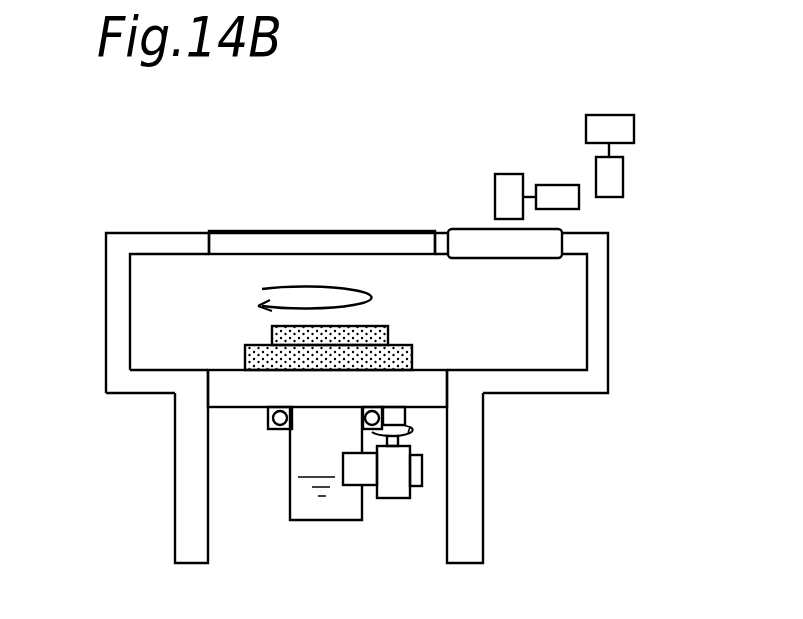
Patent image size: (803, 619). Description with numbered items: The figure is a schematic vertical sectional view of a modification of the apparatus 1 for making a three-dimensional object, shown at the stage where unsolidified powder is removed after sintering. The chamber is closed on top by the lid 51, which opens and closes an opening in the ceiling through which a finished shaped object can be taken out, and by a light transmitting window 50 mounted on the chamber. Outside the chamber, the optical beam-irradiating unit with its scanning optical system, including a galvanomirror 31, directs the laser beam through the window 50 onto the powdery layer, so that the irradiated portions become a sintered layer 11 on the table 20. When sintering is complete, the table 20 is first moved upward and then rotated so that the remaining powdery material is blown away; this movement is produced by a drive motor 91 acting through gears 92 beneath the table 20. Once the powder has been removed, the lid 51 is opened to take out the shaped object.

The processing chamber housing 1 is at (148, 328).
The lid 51 is at (278, 240).
The light transmitting window 50 is at (552, 247).
The galvanomirror 31 is at (608, 130).
The sintered layer 11 is at (377, 338).
The table 20 is at (235, 391).
The drive motor 91 is at (392, 487).
The gears 92 is at (407, 405).